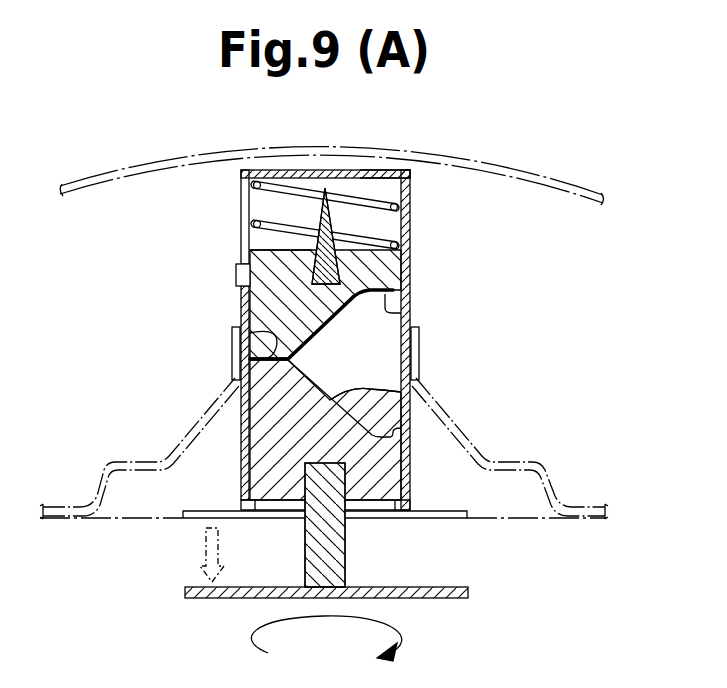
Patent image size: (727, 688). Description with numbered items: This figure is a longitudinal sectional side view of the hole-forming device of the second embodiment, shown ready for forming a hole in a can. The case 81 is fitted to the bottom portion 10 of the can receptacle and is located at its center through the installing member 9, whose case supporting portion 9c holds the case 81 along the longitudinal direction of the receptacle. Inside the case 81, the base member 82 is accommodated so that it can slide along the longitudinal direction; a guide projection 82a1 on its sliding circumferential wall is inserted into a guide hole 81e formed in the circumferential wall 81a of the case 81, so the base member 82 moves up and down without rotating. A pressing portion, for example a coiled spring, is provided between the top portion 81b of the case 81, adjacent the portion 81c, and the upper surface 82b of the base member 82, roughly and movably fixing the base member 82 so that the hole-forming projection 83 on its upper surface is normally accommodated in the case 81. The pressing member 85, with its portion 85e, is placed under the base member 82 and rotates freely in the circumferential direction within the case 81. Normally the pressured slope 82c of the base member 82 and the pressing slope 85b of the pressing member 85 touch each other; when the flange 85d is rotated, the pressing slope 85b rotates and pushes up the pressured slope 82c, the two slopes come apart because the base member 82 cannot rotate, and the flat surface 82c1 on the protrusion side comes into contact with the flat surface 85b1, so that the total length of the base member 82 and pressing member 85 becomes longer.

The installing member 9 is at (565, 495).
The case supporting portion 9c is at (418, 345).
The bottom portion 10 is at (512, 165).
The case 81 is at (326, 300).
The circumferential wall 81a is at (411, 300).
The top portion 81b is at (387, 170).
The housing top wall 81c is at (318, 170).
The guide hole 81e is at (242, 203).
The base member 82 is at (320, 327).
The guide projection 82a1 is at (238, 268).
The upper surface 82b is at (262, 252).
The pressured slope 82c is at (351, 315).
The flat surface 82c1 is at (411, 318).
The hole-forming projection 83 is at (338, 258).
The pressing member 85 is at (339, 459).
The pressing slope 85b is at (411, 393).
The flat surface 85b1 is at (250, 334).
The flange 85d is at (462, 588).
The shaft of lower block 85e is at (346, 568).